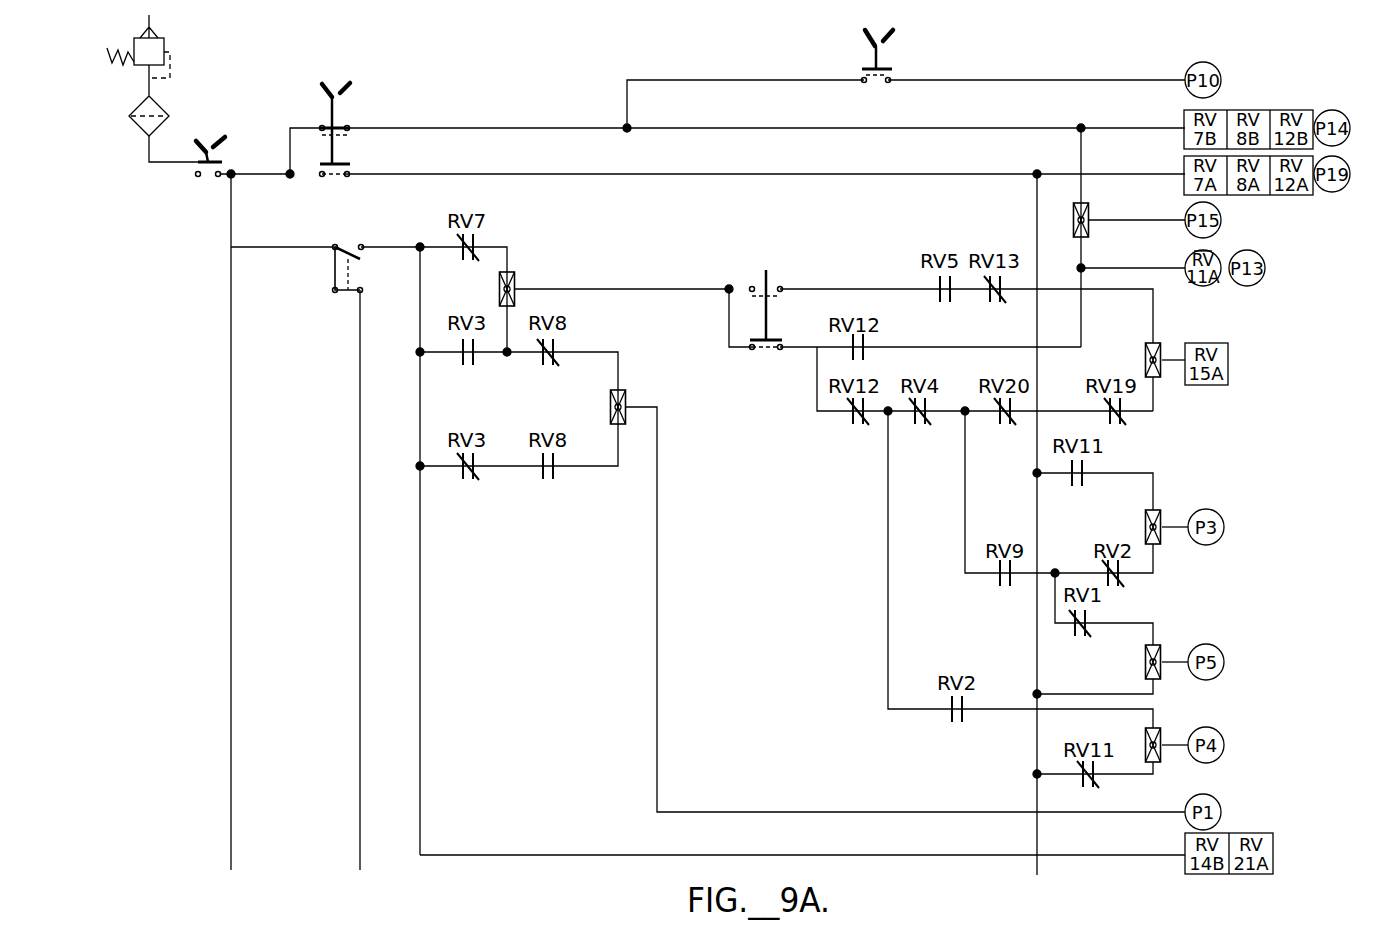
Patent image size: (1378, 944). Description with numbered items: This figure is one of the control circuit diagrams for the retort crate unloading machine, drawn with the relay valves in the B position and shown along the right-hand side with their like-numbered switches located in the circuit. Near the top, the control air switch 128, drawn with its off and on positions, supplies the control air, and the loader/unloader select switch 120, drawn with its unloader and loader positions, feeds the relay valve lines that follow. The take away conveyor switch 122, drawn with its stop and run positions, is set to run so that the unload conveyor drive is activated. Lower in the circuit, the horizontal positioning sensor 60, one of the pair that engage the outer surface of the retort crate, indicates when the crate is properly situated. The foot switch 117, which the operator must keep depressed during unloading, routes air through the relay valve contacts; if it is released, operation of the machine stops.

The horizontal positioning sensor 60 is at (349, 245).
The foot switch 117 is at (770, 265).
The loader/unloader select switch 120 is at (345, 66).
The take away conveyor switch 122 is at (884, 32).
The control air switch 128 is at (204, 130).